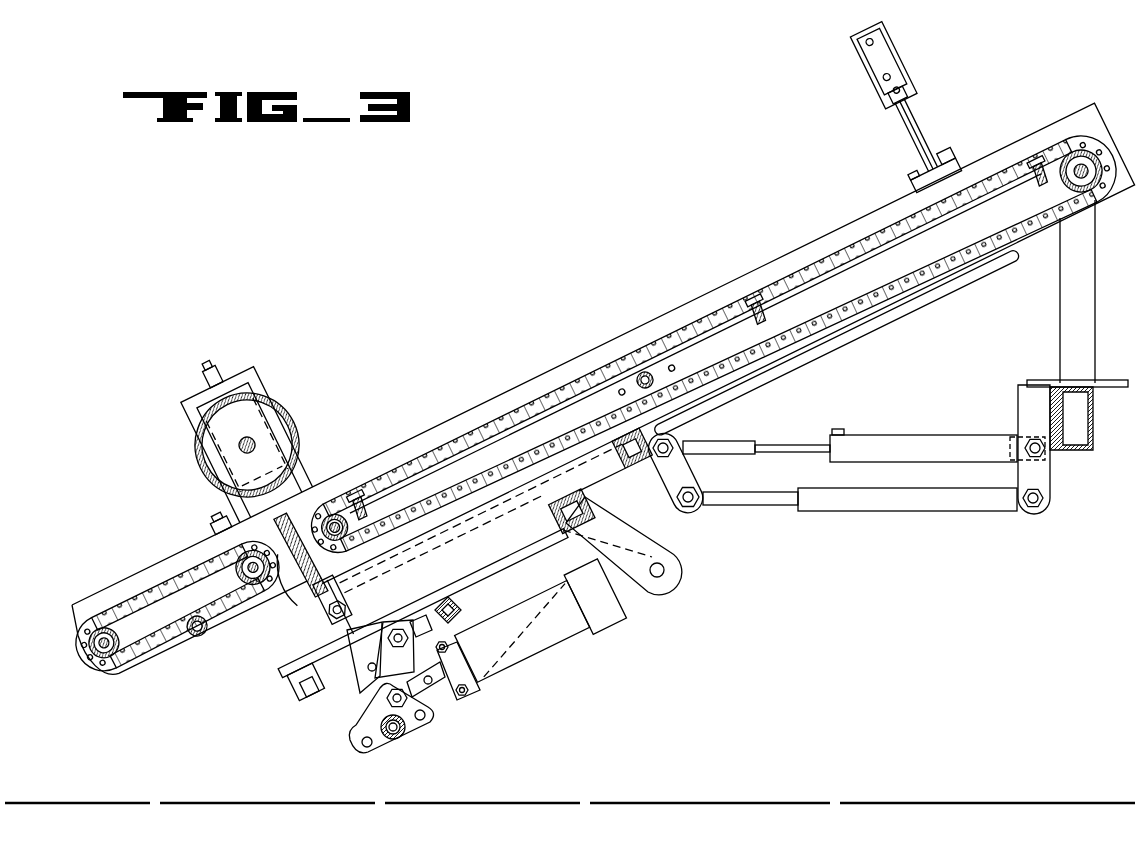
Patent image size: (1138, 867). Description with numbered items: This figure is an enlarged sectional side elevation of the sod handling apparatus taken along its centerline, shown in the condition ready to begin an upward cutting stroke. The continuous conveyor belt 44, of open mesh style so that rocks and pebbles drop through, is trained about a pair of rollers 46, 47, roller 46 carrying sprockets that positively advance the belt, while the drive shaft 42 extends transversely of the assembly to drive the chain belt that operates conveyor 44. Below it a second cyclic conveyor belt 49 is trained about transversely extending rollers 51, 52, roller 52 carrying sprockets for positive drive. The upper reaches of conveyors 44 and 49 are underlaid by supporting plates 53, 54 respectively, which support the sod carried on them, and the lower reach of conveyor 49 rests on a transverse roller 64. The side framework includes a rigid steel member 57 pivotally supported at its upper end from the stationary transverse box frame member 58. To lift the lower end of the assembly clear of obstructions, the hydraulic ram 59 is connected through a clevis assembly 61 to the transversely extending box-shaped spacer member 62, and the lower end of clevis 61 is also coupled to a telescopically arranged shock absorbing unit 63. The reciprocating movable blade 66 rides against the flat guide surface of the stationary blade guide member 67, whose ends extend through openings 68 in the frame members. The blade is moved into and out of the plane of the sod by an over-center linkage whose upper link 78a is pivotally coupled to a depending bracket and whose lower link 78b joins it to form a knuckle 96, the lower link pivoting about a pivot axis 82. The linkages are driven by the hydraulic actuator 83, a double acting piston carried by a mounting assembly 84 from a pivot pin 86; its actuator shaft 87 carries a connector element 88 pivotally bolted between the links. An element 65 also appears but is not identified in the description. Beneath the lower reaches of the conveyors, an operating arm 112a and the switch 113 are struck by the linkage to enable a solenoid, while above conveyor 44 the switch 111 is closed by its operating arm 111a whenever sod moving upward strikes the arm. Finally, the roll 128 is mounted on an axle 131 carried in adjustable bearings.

The drive shaft 42 is at (655, 372).
The continuous conveyor belt 44 is at (597, 365).
The roller 46 is at (1060, 188).
The roller 47 is at (357, 502).
The cyclic conveyor belt 49 is at (103, 603).
The roller 51 is at (122, 660).
The roller 52 is at (235, 583).
The supporting plate 53 is at (587, 383).
The supporting plate 54 is at (163, 590).
The rigid steel member 57 is at (708, 302).
The transverse box frame member 58 is at (1065, 310).
The hydraulic ram 59 is at (923, 443).
The clevis assembly 61 is at (687, 463).
The box-shaped spacer member 62 is at (633, 465).
The shock absorbing unit 63 is at (928, 498).
The transverse roller 64 is at (195, 628).
The guide bar 65 is at (880, 323).
The movable blade 66 is at (293, 633).
The stationary blade guide member 67 is at (293, 610).
The openings 68 is at (203, 530).
The upper link 78a is at (397, 633).
The lower link 78b is at (385, 700).
The pivot axis 82 is at (397, 747).
The hydraulic actuator 83 is at (543, 633).
The mounting assembly 84 is at (603, 620).
The pivot pin 86 is at (657, 568).
The actuator shaft 87 is at (413, 687).
The connector element 88 is at (430, 707).
The knuckle 96 is at (447, 610).
The switch 111 is at (895, 62).
The operating arm 111a is at (928, 128).
The operating arm 112a is at (487, 657).
The switch 113 is at (293, 690).
The roll 128 is at (300, 433).
The axle 131 is at (250, 440).